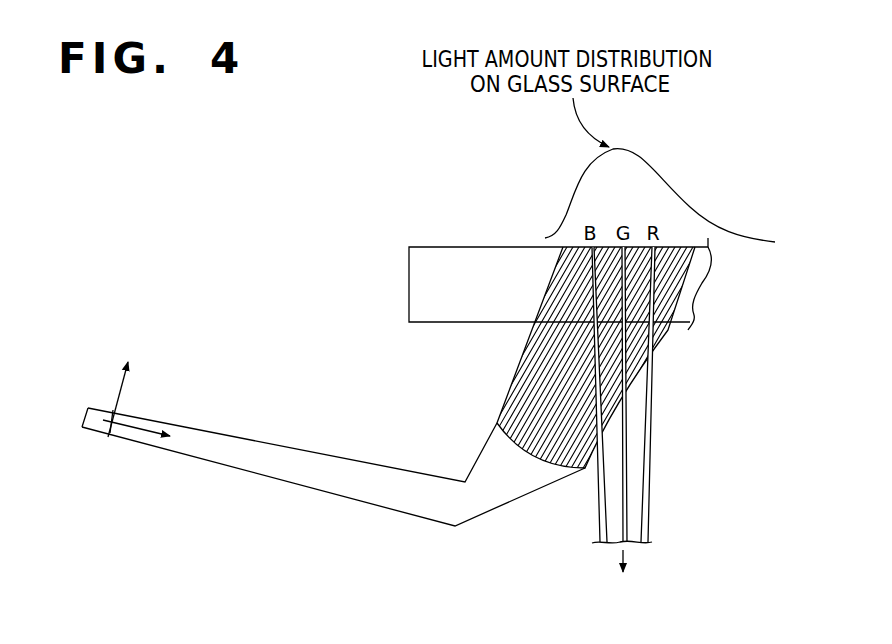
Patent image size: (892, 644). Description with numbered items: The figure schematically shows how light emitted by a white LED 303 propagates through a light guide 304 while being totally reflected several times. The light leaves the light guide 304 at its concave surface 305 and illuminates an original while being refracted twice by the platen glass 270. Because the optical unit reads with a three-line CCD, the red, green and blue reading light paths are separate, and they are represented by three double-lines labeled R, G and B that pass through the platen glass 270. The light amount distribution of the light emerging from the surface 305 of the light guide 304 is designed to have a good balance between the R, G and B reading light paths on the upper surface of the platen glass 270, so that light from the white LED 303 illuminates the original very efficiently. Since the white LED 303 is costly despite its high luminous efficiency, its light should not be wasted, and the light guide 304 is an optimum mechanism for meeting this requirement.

The platen glass 270 is at (462, 247).
The white LED 303 is at (97, 407).
The light guide 304 is at (315, 458).
The concave surface 305 is at (580, 465).